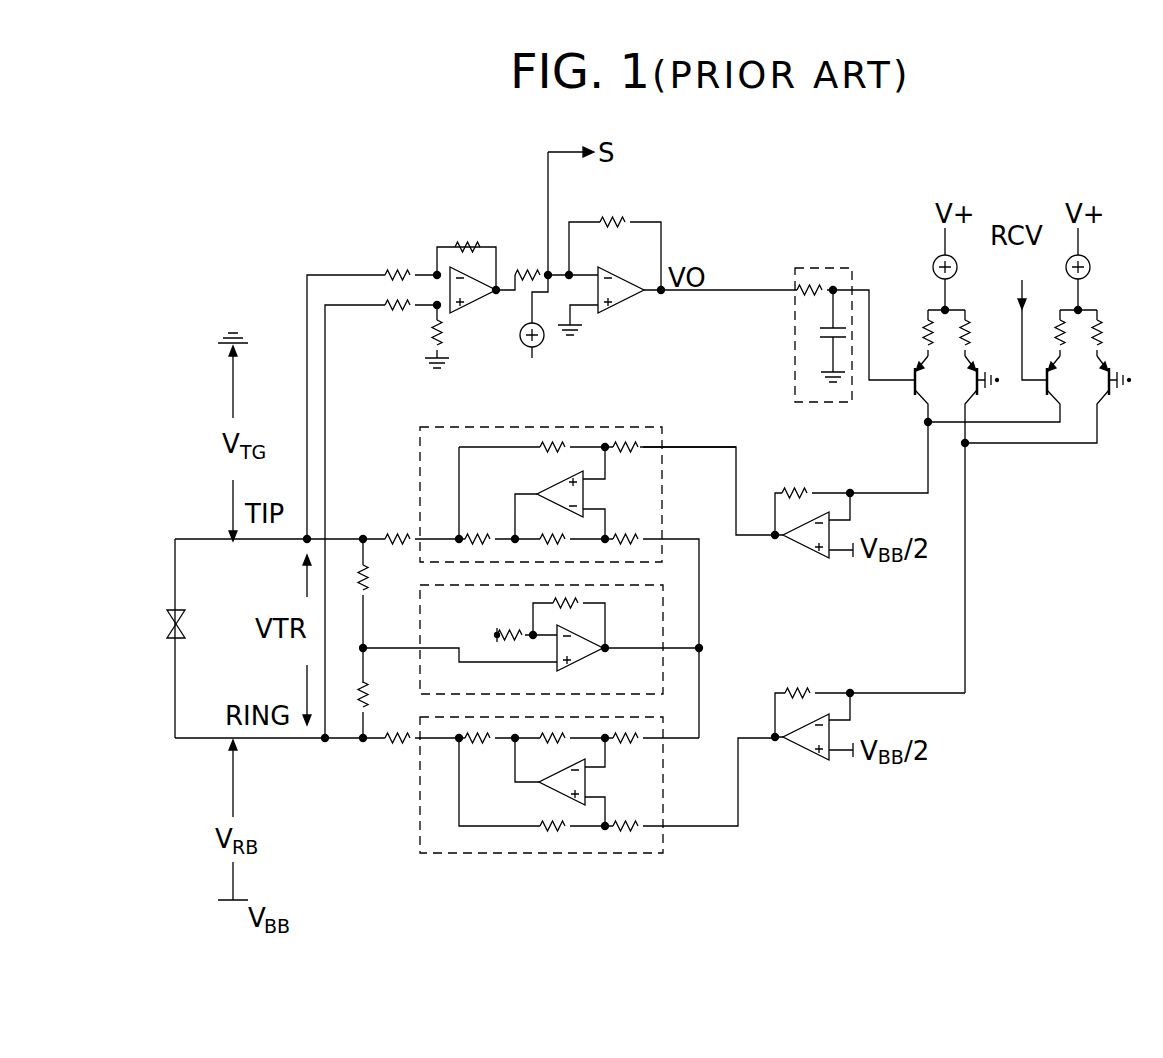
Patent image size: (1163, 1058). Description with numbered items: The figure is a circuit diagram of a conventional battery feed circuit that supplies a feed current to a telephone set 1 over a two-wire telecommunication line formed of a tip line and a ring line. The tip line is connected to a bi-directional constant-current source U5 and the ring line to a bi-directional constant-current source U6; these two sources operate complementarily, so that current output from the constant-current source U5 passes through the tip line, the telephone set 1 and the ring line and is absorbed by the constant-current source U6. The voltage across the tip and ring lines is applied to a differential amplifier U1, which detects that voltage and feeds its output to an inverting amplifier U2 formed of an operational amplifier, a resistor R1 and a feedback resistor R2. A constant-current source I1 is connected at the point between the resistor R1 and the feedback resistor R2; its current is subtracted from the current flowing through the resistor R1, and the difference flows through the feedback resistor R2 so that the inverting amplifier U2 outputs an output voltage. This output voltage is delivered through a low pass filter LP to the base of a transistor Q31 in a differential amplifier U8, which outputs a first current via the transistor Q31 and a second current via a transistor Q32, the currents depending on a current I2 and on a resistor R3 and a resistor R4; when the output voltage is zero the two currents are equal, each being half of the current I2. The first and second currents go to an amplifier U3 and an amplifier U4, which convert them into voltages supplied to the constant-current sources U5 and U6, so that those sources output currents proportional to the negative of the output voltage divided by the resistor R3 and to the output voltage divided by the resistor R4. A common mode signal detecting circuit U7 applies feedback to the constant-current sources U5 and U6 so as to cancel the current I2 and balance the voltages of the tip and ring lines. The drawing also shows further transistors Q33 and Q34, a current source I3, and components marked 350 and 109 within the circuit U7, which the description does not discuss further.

The telephone set 1 is at (164, 621).
The differential amplifier U1 is at (462, 285).
The inverting amplifier U2 is at (611, 262).
The amplifier U3 is at (747, 502).
The amplifier U4 is at (869, 706).
The bi-directional constant-current source U5 is at (543, 428).
The bi-directional constant-current source U6 is at (665, 832).
The common mode signal detecting circuit U7 is at (597, 639).
The differential amplifier U8 is at (856, 333).
The resistor R1 is at (522, 265).
The feedback resistor R2 is at (615, 253).
The resistor R3 is at (904, 333).
The resistor R4 is at (983, 333).
The transistor Q31 is at (893, 389).
The transistor Q32 is at (993, 391).
The transistor Q33 is at (994, 389).
The transistor Q34 is at (1059, 399).
The constant-current source I1 is at (520, 339).
The current I2 is at (927, 271).
The current source I3 is at (1086, 271).
The low pass filter LP is at (820, 262).
The input resistor 350 is at (524, 651).
The amplifier 109 is at (637, 669).